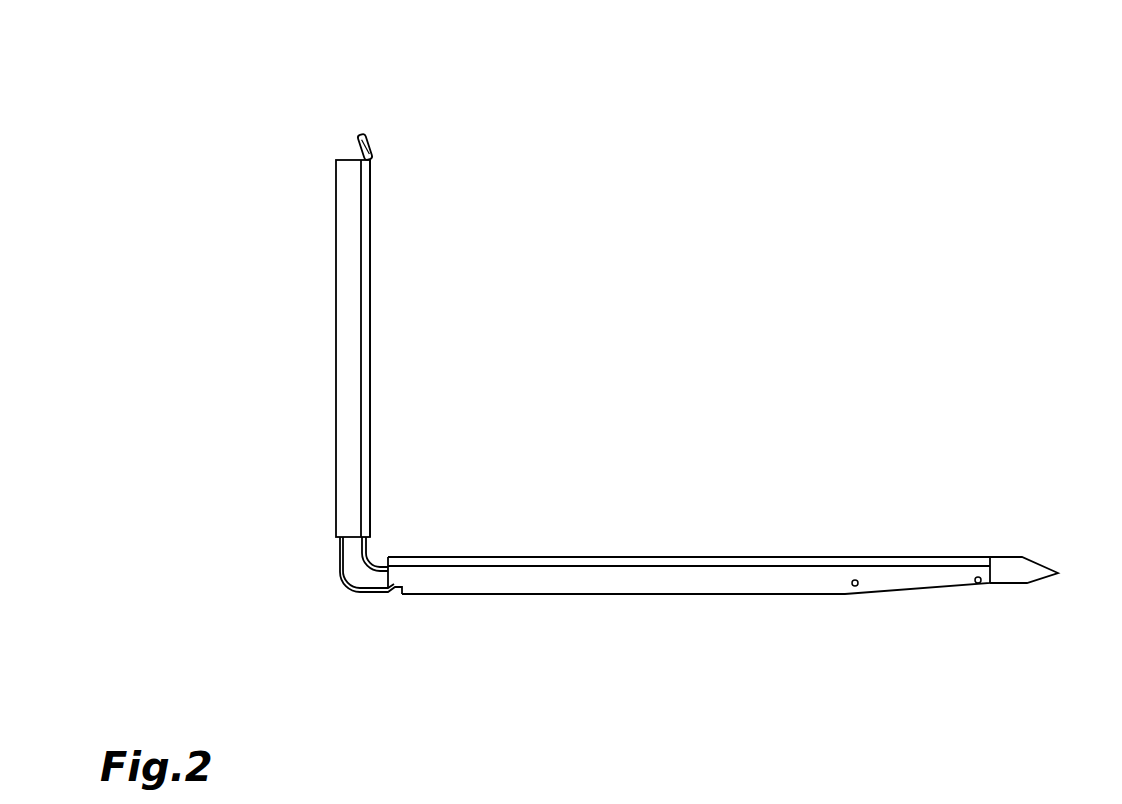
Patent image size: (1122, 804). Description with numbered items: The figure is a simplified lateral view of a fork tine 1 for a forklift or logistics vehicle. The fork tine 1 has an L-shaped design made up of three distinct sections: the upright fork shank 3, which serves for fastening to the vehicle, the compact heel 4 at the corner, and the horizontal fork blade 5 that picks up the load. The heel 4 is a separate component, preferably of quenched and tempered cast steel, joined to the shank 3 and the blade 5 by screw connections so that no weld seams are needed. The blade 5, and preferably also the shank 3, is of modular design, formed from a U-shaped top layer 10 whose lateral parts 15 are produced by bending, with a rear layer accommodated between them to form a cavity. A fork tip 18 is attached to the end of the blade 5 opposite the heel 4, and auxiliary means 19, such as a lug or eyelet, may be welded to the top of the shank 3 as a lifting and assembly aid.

The fork tine 1 is at (903, 218).
The fork shank 3 is at (366, 293).
The heel 4 is at (355, 572).
The fork blade 5 is at (570, 566).
The top layer 10 is at (371, 368).
The lateral parts 15 is at (345, 250).
The fork tip 18 is at (1022, 571).
The auxiliary means 19 is at (369, 138).